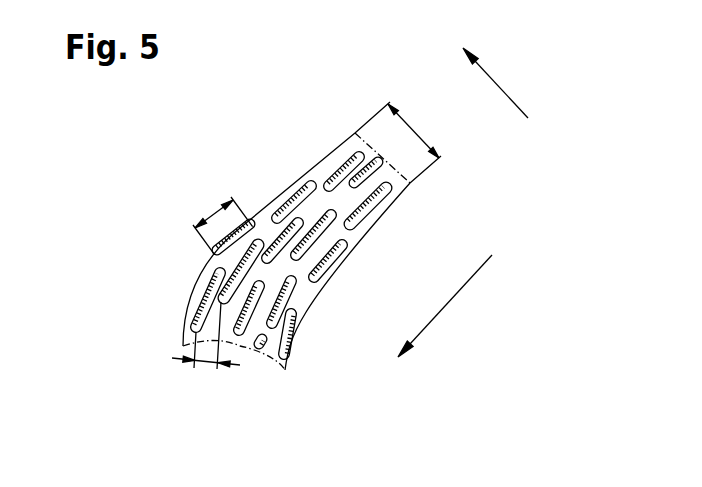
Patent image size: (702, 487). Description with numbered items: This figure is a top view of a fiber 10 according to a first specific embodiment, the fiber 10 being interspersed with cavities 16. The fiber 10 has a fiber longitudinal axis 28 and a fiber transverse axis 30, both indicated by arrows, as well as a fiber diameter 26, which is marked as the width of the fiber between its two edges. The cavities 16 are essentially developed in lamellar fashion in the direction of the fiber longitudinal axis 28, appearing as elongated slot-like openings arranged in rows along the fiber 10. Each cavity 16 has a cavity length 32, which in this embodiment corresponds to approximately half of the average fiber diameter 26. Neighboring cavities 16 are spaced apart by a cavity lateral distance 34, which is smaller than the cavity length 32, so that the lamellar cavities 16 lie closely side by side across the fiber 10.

The fiber 10 is at (445, 177).
The cavities 16 is at (303, 182).
The fiber diameter 26 is at (414, 130).
The fiber longitudinal axis 28 is at (452, 298).
The fiber transverse axis 30 is at (502, 90).
The cavity length 32 is at (214, 214).
The cavity lateral distance 34 is at (203, 363).